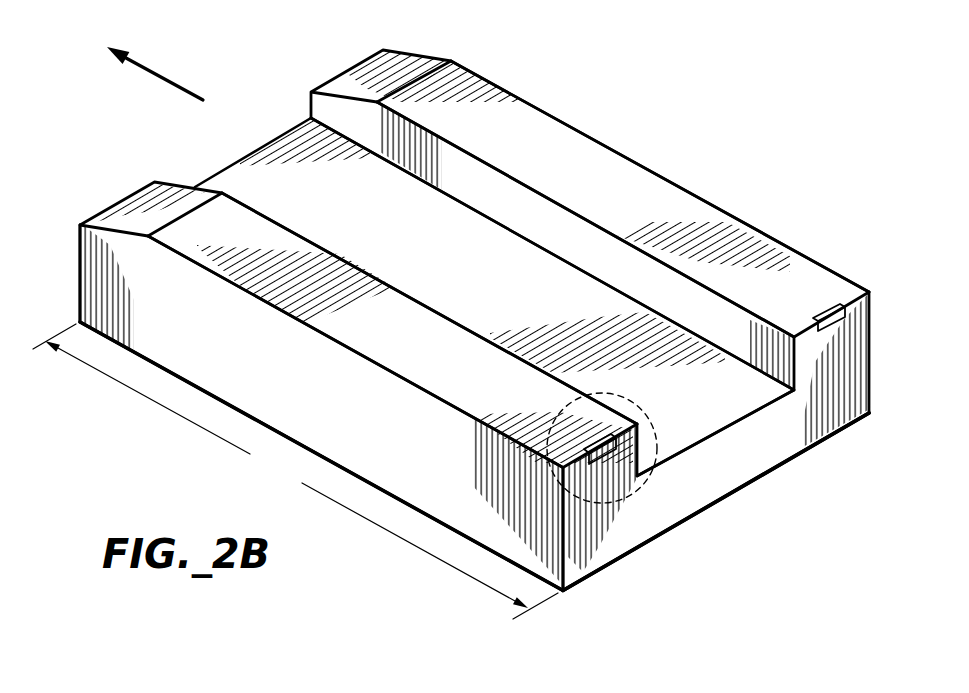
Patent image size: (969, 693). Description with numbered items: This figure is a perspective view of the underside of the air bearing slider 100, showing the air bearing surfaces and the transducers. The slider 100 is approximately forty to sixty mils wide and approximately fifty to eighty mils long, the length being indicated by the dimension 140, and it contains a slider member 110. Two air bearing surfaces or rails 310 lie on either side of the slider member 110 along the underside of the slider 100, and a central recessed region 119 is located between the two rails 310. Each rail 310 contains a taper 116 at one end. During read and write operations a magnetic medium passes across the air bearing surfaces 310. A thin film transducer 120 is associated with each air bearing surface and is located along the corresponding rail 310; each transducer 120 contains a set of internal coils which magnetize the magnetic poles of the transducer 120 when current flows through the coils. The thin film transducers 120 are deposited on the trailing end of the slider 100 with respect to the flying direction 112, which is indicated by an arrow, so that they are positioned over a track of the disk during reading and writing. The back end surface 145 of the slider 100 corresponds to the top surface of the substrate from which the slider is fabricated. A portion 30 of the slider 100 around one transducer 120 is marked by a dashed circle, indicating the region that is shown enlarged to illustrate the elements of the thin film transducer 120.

The air bearing slider 100 is at (685, 105).
The slider member 110 is at (700, 492).
The flying direction 112 is at (172, 78).
The taper 116 is at (152, 205).
The central recessed region 119 is at (696, 419).
The thin film transducer 120 is at (603, 463).
The length dimension 140 is at (295, 471).
The back end surface 145 is at (733, 474).
The portion of the air bearing slider 30 is at (648, 412).
The air bearing surface rail 310 is at (230, 207).